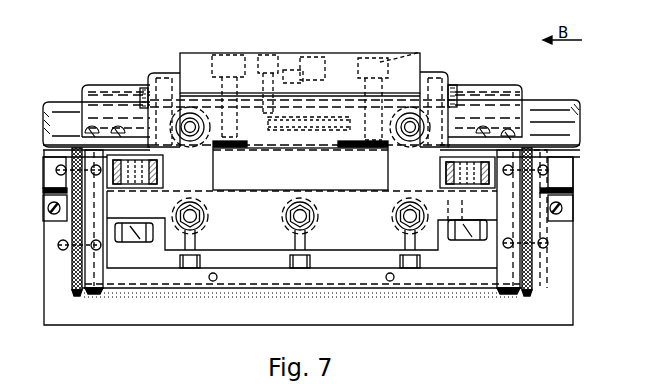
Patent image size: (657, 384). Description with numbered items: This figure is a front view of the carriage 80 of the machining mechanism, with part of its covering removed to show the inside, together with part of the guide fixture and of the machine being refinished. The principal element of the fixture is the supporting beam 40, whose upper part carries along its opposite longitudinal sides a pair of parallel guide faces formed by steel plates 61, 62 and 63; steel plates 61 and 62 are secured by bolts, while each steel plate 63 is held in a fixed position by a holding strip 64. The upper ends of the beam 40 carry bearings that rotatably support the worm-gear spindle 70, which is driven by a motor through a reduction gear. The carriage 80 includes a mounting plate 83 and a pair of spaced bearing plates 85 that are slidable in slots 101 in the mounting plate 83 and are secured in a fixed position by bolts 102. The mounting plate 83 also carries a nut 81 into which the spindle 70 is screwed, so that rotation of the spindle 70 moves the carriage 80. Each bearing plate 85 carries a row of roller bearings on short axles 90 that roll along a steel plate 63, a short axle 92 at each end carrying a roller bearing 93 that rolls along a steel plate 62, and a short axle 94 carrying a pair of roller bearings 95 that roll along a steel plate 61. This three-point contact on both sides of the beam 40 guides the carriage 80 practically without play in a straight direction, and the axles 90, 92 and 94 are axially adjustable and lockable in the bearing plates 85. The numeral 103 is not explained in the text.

The supporting beam 40 is at (567, 275).
The steel plate 61 is at (573, 152).
The steel plate 62 is at (565, 173).
The steel plate 63 is at (570, 189).
The holding strip 64 is at (572, 210).
The worm-gear spindle 70 is at (550, 106).
The carriage 80 is at (401, 48).
The nut 81 is at (258, 149).
The mounting plate 83 is at (193, 62).
The bearing plate 85 is at (357, 240).
The short axle 90 is at (392, 216).
The short axle 92 is at (463, 202).
The roller bearing 93 is at (467, 172).
The short axle 94 is at (400, 142).
The roller bearing 95 is at (470, 78).
The slot 101 is at (250, 60).
The bolt 102 is at (230, 60).
The channel 103 is at (308, 60).